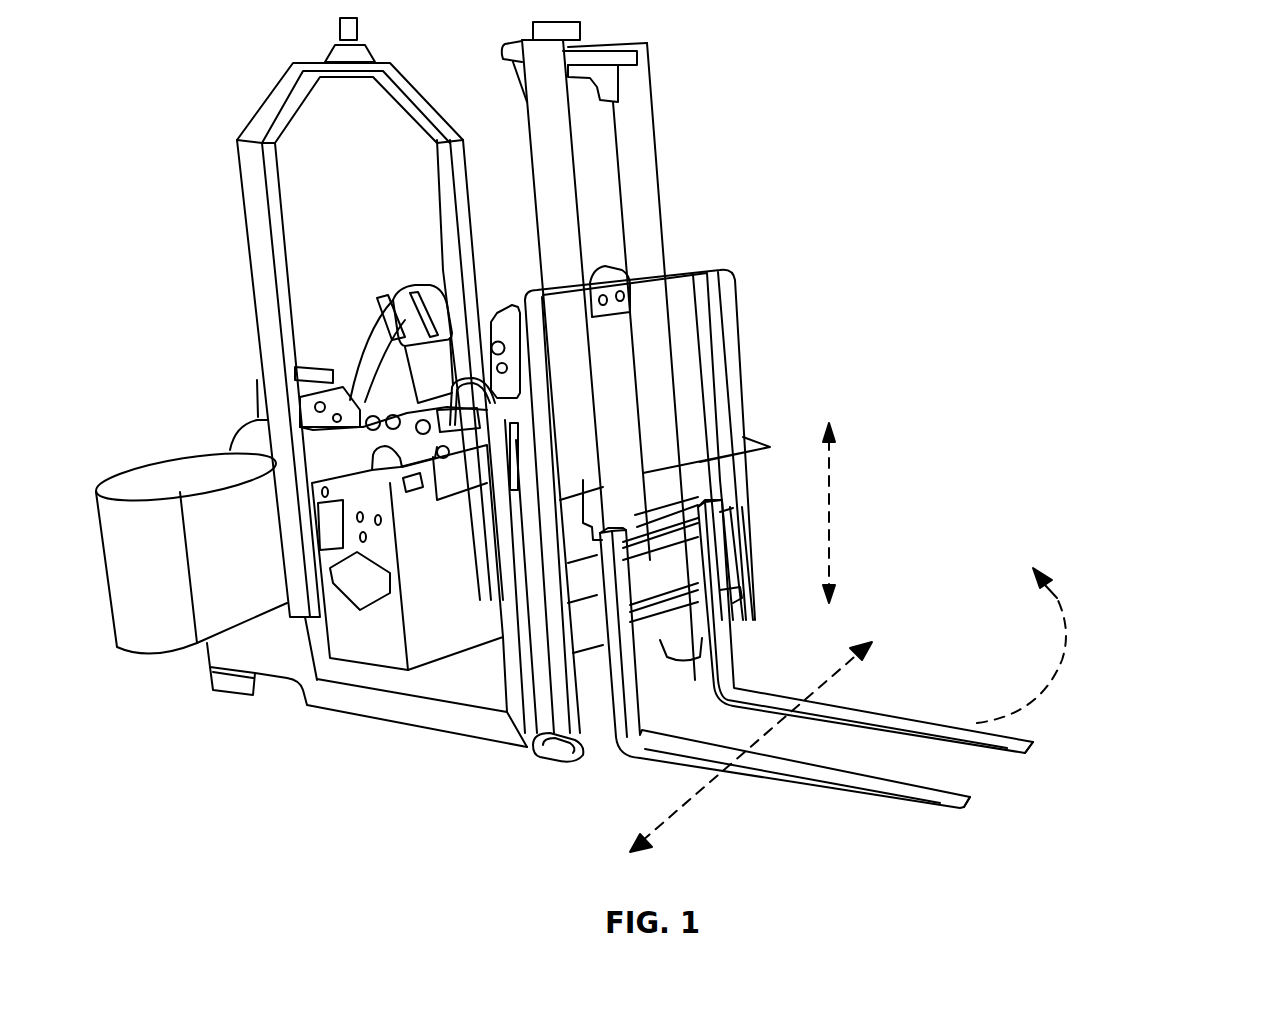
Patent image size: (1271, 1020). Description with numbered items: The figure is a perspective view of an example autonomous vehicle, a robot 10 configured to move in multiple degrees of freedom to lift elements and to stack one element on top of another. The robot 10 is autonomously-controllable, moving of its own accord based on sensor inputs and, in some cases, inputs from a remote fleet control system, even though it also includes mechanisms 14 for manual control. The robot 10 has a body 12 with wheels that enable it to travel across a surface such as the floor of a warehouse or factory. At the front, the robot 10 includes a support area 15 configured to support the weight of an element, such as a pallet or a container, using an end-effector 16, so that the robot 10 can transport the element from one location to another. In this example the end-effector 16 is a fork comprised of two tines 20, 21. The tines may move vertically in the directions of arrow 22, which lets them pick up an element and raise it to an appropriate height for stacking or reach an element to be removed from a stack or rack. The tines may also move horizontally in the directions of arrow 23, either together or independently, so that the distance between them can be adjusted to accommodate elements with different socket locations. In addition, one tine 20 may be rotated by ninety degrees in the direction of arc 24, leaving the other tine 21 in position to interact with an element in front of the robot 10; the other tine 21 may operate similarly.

The robot 10 is at (652, 438).
The body 12 is at (507, 725).
The mechanisms for manual control 14 is at (413, 287).
The support area 15 is at (905, 481).
The end-effector 16 is at (920, 717).
The tine 20 is at (1035, 745).
The tine 21 is at (995, 815).
The arrow 22 is at (833, 482).
The arrow 23 is at (670, 817).
The arc 24 is at (1059, 601).